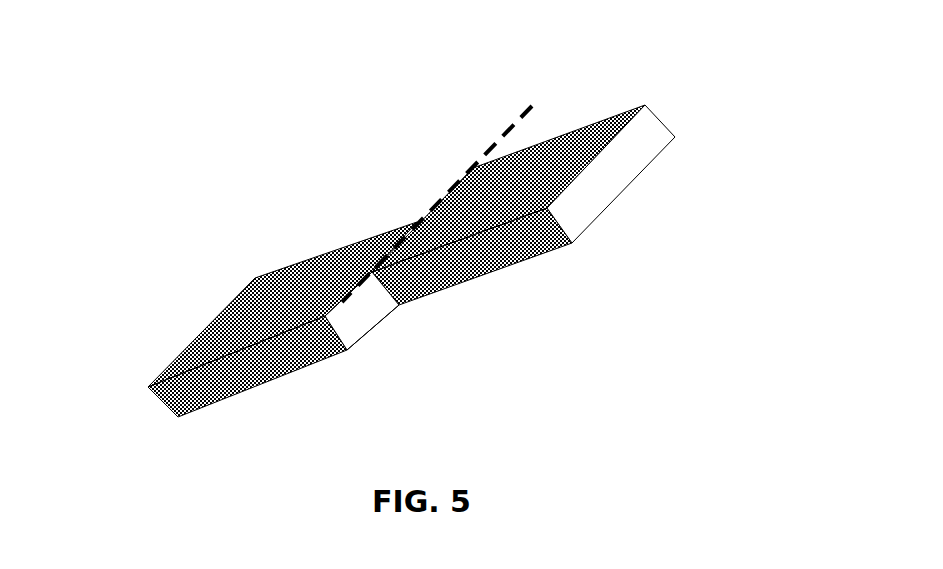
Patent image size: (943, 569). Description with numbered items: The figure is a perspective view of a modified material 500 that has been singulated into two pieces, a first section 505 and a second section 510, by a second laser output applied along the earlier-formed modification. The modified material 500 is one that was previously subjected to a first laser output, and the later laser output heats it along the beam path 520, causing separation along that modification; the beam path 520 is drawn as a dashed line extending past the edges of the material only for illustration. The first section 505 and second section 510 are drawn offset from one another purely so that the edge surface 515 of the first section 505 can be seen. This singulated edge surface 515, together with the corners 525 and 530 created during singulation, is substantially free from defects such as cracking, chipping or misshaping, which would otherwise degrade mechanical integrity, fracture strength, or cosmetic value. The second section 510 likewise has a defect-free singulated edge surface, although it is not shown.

The modified material 500 is at (140, 87).
The first section 505 is at (172, 285).
The second section 510 is at (707, 76).
The edge surface 515 is at (358, 313).
The beam path 520 is at (437, 208).
The corner 525 is at (327, 313).
The corner 530 is at (355, 343).